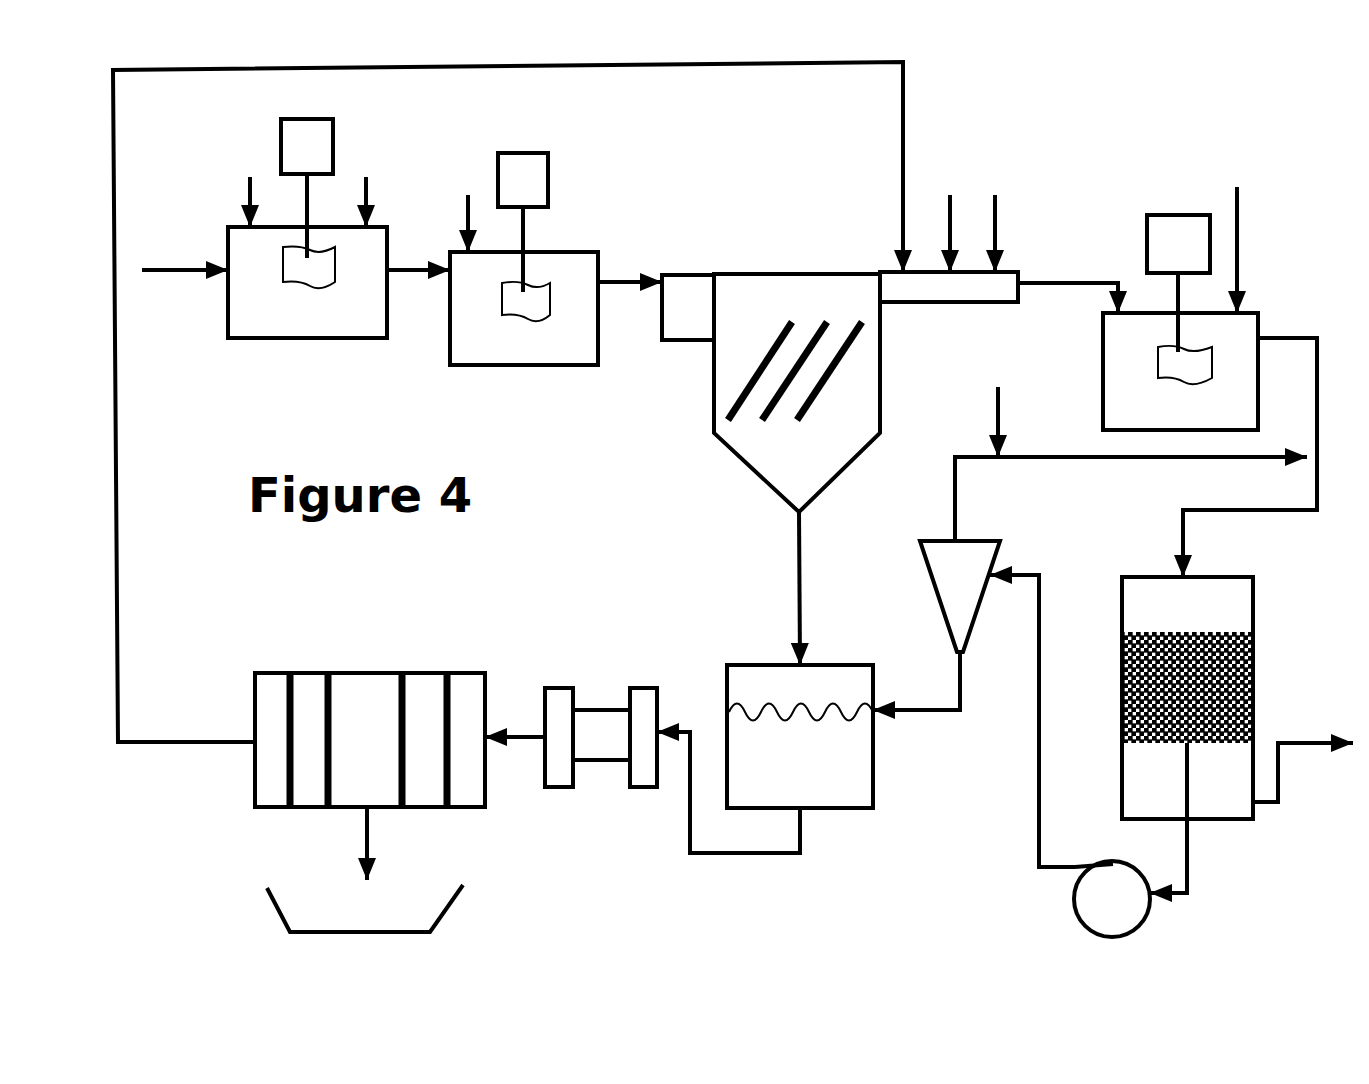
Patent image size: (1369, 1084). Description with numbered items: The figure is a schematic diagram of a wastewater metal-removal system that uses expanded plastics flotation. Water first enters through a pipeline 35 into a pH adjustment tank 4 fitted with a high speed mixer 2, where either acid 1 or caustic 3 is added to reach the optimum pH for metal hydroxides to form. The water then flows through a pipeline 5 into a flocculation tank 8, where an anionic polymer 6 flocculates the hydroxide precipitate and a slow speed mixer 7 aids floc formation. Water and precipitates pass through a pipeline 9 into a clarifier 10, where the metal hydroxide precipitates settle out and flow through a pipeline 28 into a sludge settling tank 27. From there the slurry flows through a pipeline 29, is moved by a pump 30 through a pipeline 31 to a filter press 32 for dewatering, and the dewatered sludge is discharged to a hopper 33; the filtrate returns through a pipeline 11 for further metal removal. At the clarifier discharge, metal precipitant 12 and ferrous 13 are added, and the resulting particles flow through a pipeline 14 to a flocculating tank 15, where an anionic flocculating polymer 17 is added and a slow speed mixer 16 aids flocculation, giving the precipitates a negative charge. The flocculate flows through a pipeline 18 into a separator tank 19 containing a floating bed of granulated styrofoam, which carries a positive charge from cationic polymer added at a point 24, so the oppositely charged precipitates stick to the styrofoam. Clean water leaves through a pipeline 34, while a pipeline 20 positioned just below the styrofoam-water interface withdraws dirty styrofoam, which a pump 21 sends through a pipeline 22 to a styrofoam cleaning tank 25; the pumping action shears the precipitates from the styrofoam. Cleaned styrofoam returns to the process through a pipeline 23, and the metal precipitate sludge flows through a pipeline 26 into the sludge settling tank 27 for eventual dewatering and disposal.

The acid 1 is at (250, 181).
The high speed mixer 2 is at (307, 146).
The caustic 3 is at (366, 181).
The pH adjustment tank 4 is at (307, 256).
The pipeline 5 is at (403, 277).
The anionic polymer 6 is at (468, 201).
The slow speed mixer 7 is at (523, 180).
The flocculation tank 8 is at (524, 286).
The pipeline 9 is at (621, 277).
The clarifier 10 is at (840, 392).
The pipeline 11 is at (742, 67).
The metal precipitant 12 is at (950, 211).
The ferrous 13 is at (1010, 211).
The pipeline 14 is at (1070, 277).
The flocculating tank 15 is at (1180, 351).
The slow speed mixer 16 is at (1178, 244).
The anionic flocculating polymer 17 is at (1235, 221).
The pipeline 18 is at (1230, 517).
The separator tank 19 is at (1187, 698).
The pipeline 20 is at (1197, 868).
The pump 21 is at (1112, 899).
The pipeline 22 is at (1042, 613).
The pipeline 23 is at (955, 485).
The cationic polymer addition point 24 is at (998, 397).
The styrofoam cleaning tank 25 is at (960, 596).
The pipeline 26 is at (940, 717).
The sludge settling tank 27 is at (800, 736).
The pipeline 28 is at (797, 562).
The pipeline 29 is at (735, 858).
The pump 30 is at (601, 737).
The pipeline 31 is at (517, 743).
The filter press 32 is at (370, 740).
The hopper 33 is at (365, 869).
The pipeline 34 is at (1315, 740).
The pipeline 35 is at (173, 275).